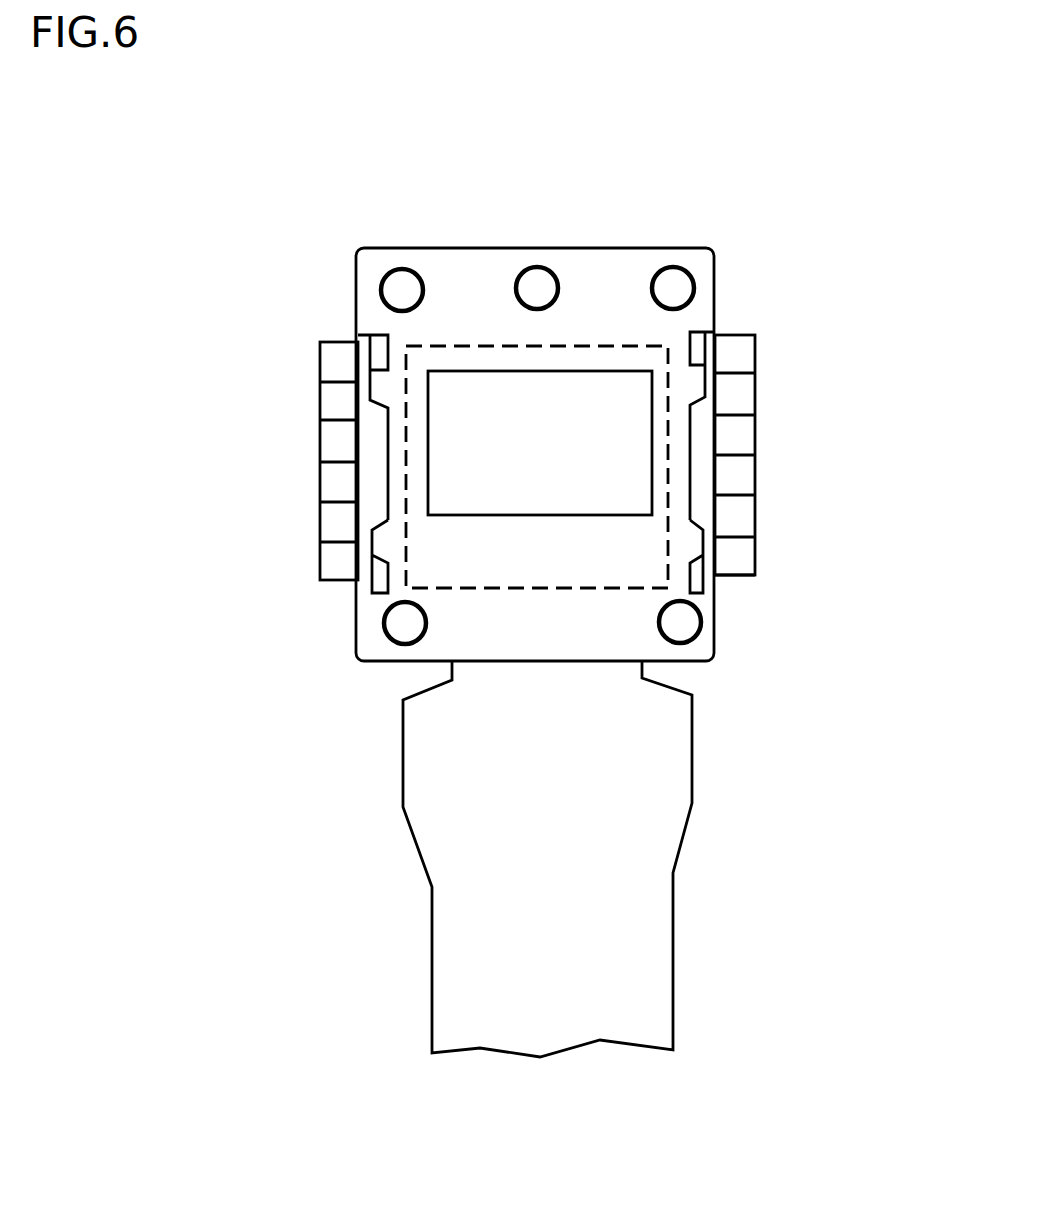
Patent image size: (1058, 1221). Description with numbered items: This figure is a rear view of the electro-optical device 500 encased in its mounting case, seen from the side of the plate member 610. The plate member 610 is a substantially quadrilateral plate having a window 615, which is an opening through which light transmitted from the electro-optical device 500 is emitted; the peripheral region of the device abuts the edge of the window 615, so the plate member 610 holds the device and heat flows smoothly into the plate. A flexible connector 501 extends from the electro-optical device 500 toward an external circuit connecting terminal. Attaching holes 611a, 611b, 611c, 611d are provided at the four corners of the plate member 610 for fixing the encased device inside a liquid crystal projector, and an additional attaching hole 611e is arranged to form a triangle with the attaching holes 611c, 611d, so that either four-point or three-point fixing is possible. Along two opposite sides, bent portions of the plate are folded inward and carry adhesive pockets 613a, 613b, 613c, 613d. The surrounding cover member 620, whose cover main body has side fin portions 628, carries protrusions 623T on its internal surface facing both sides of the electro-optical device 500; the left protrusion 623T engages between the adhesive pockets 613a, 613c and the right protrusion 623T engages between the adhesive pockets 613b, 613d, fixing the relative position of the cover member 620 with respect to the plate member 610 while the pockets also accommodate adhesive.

The electro-optical device 500 is at (415, 346).
The flexible connector 501 is at (438, 867).
The plate member 610 is at (712, 248).
The attaching hole 611a is at (392, 267).
The attaching hole 611b is at (665, 267).
The attaching hole 611c is at (393, 640).
The attaching hole 611d is at (698, 635).
The attaching hole 611e is at (538, 267).
The adhesive pocket 613a is at (375, 377).
The adhesive pocket 613b is at (713, 367).
The adhesive pocket 613c is at (373, 550).
The adhesive pocket 613d is at (715, 533).
The window 615 is at (572, 515).
The cover member 620 is at (792, 299).
The protrusions 623T is at (367, 443).
The side fin portions 628 is at (758, 560).